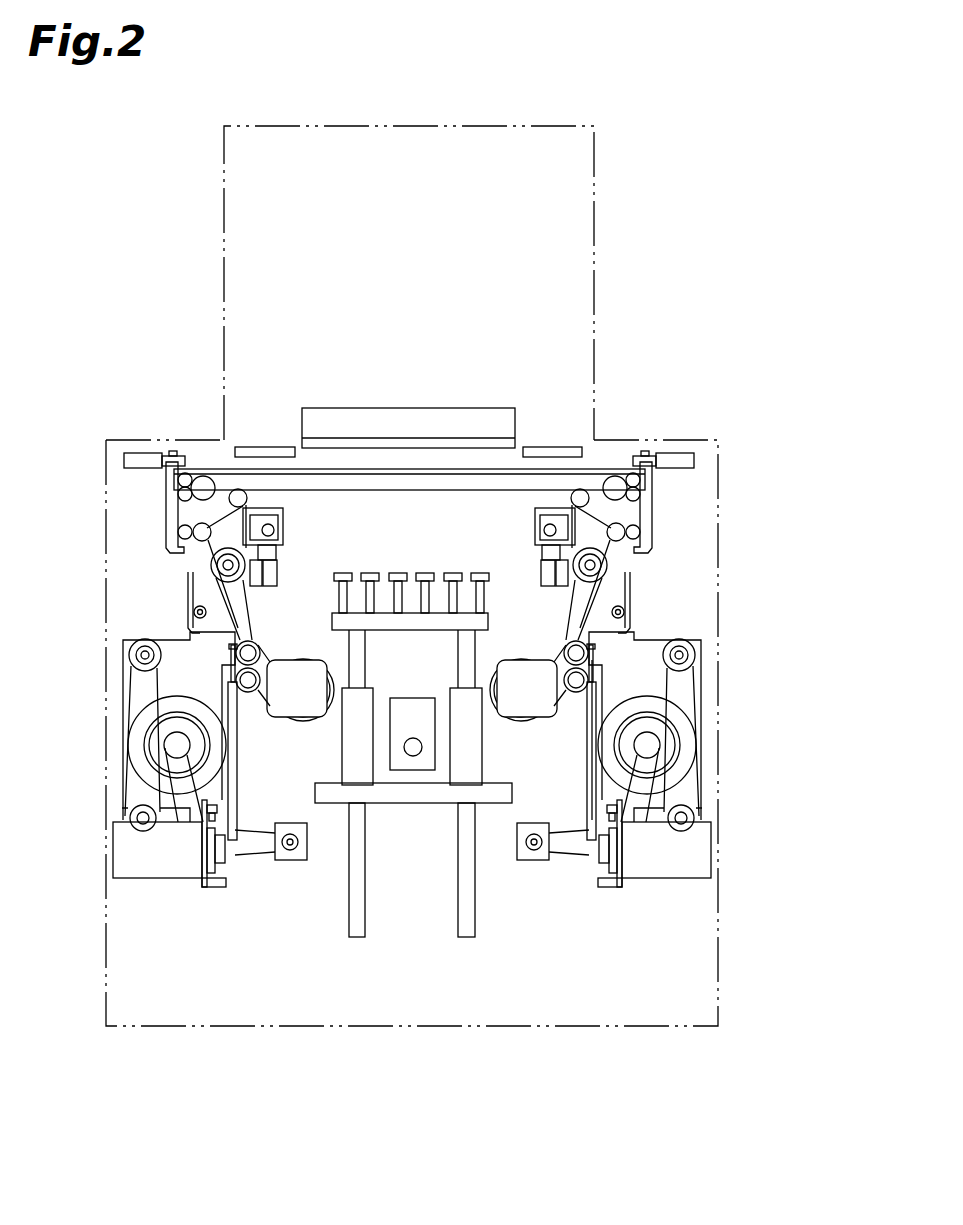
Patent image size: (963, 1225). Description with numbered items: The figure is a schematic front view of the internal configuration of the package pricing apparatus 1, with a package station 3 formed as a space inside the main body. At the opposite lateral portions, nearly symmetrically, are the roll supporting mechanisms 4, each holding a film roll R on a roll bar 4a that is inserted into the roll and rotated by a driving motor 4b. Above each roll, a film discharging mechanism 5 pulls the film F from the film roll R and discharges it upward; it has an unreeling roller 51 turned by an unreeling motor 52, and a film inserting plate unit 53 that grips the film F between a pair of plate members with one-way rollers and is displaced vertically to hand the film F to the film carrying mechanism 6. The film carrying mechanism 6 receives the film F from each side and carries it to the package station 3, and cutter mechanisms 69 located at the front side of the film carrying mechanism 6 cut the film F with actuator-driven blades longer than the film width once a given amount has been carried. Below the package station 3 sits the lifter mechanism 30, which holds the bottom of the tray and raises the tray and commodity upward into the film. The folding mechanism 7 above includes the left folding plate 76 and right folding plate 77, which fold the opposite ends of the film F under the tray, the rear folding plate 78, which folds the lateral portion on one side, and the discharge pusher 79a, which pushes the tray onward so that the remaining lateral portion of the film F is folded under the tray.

The package pricing apparatus 1 is at (414, 124).
The package station 3 is at (437, 360).
The roll supporting mechanism 4 is at (424, 776).
The roll bar 4a is at (650, 738).
The driving motor 4b is at (298, 860).
The film discharging mechanism 5 is at (414, 551).
The film carrying mechanism 6 is at (429, 473).
The folding mechanism 7 is at (535, 420).
The lifter mechanism 30 is at (403, 812).
The unreeling roller 51 is at (143, 636).
The unreeling motor 52 is at (120, 815).
The film inserting plate unit 53 is at (183, 590).
The cutter mechanism 69 is at (138, 452).
The left folding plate 76 is at (565, 452).
The right folding plate 77 is at (263, 452).
The rear folding plate 78 is at (342, 445).
The discharge pusher 79a is at (445, 420).
The film F is at (660, 630).
The film roll R is at (228, 745).